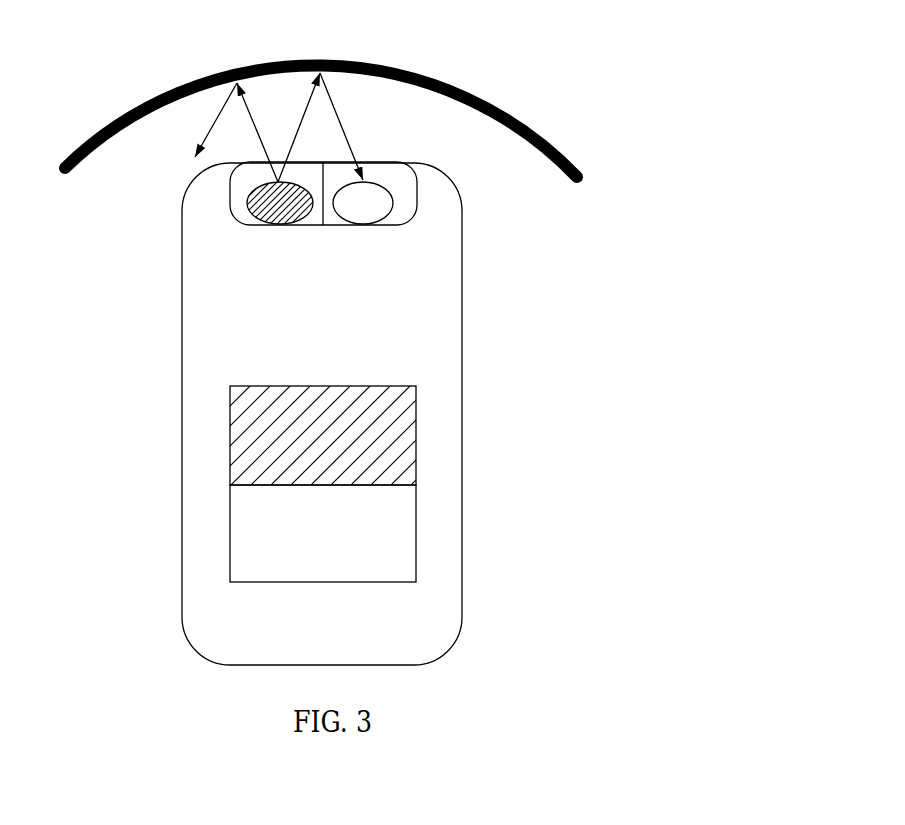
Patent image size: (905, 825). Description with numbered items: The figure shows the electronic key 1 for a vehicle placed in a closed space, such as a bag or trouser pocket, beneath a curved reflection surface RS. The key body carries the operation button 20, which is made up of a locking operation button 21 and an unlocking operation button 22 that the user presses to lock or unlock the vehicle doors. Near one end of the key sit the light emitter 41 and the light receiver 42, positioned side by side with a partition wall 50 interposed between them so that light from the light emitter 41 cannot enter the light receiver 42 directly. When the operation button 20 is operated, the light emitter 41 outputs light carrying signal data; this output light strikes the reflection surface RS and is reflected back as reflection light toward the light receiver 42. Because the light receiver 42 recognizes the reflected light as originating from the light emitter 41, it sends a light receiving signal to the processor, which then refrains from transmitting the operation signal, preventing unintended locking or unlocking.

The electronic key 1 is at (502, 279).
The operation button 20 is at (362, 484).
The locking operation button 21 is at (416, 437).
The unlocking operation button 22 is at (371, 533).
The light emitter 41 is at (310, 226).
The light receiver 42 is at (393, 226).
The partition wall 50 is at (362, 174).
The reflection surface RS is at (500, 106).